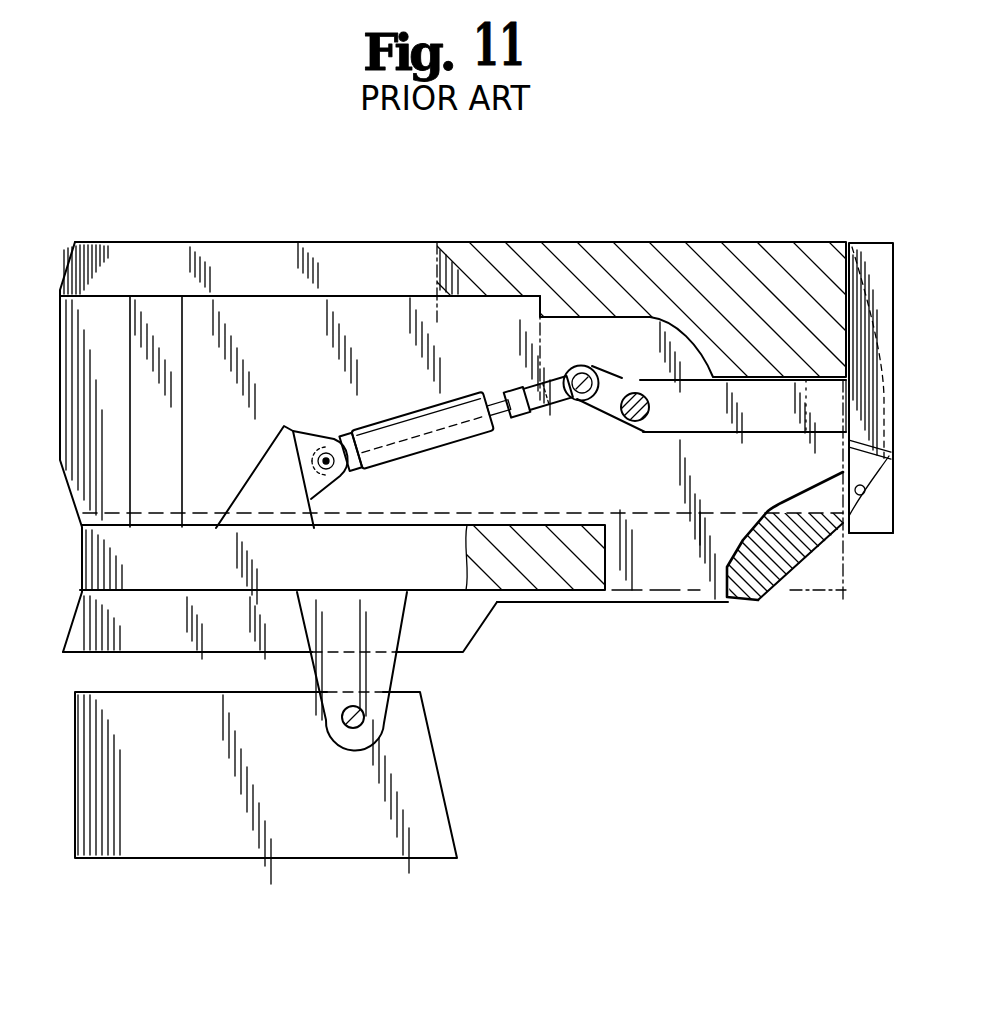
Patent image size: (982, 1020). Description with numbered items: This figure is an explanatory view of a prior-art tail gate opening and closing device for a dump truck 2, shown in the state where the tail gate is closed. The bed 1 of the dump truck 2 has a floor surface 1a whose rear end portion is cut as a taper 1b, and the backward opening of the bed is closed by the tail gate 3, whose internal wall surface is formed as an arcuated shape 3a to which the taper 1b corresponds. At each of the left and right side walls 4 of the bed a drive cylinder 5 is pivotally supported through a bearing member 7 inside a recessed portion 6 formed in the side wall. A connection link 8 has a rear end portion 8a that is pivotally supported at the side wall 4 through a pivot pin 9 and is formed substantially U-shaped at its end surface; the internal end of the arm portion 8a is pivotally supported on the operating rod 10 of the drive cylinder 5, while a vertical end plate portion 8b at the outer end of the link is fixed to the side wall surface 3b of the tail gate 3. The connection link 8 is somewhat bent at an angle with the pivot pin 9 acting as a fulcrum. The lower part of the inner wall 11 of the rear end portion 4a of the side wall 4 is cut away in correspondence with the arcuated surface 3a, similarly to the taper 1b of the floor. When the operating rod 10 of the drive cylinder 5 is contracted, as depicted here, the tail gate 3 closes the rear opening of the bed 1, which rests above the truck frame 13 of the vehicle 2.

The bed 1 is at (734, 247).
The floor surface 1a is at (780, 563).
The taper 1b is at (810, 553).
The dump truck 2 is at (843, 200).
The tail gate 3 is at (905, 300).
The arcuated shape 3a is at (866, 491).
The side wall surfaces 3b is at (882, 535).
The side walls 4 is at (418, 240).
The rear end portions 4a is at (840, 553).
The drive cylinders 5 is at (412, 402).
The recessed portions 6 is at (357, 325).
The bearing members 7 is at (312, 437).
The connection links 8 is at (773, 437).
The rear end portions 8a is at (802, 433).
The vertical end plate portions 8b is at (865, 385).
The pivot pins 9 is at (638, 424).
The operating rods 10 is at (495, 392).
The inner walls 11 is at (707, 602).
The truck frame 13 is at (418, 760).